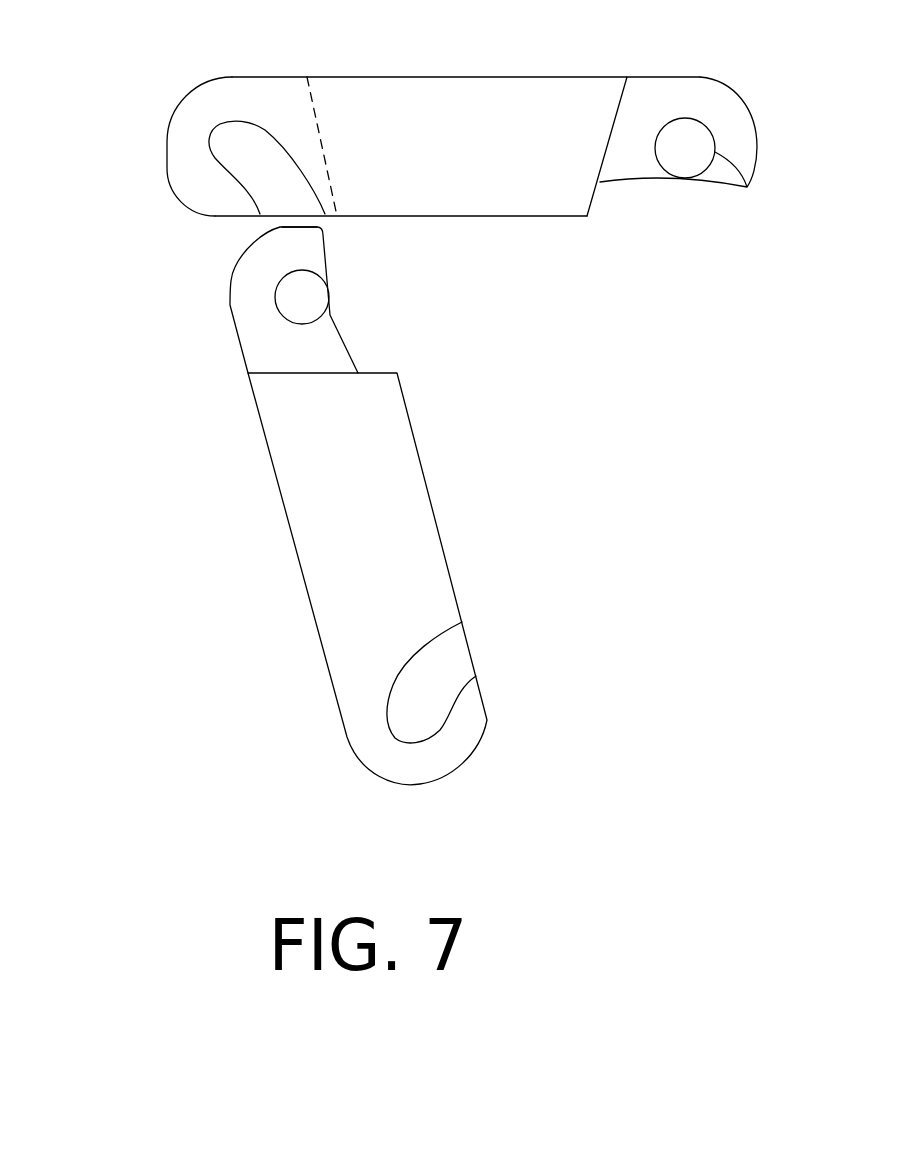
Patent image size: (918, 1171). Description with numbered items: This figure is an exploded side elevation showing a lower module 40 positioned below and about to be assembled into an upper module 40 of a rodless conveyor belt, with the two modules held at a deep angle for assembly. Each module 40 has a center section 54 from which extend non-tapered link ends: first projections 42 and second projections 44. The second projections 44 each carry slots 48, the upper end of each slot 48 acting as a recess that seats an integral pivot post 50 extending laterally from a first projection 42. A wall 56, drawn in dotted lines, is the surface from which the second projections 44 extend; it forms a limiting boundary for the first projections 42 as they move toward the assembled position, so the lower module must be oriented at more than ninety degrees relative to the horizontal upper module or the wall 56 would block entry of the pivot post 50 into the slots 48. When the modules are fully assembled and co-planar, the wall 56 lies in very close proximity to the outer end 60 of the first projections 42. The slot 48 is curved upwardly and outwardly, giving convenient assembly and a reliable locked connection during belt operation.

The module 40 is at (582, 270).
The first projections 42 is at (242, 305).
The second projections 44 is at (183, 118).
The slot 48 is at (253, 165).
The pivot post 50 is at (740, 183).
The center section 54 is at (485, 82).
The wall 56 is at (295, 110).
The outer end 60 is at (285, 225).